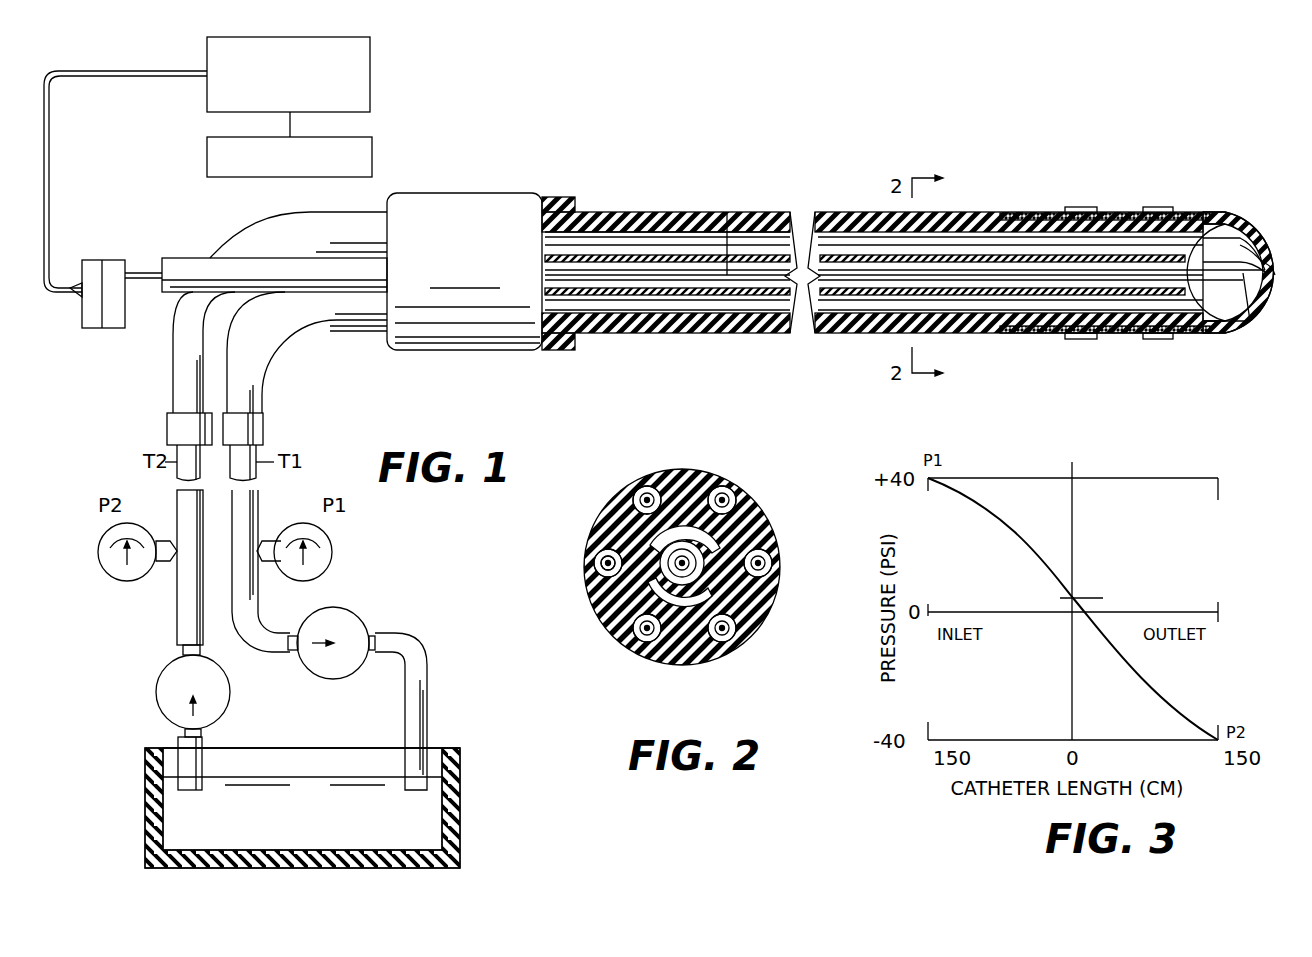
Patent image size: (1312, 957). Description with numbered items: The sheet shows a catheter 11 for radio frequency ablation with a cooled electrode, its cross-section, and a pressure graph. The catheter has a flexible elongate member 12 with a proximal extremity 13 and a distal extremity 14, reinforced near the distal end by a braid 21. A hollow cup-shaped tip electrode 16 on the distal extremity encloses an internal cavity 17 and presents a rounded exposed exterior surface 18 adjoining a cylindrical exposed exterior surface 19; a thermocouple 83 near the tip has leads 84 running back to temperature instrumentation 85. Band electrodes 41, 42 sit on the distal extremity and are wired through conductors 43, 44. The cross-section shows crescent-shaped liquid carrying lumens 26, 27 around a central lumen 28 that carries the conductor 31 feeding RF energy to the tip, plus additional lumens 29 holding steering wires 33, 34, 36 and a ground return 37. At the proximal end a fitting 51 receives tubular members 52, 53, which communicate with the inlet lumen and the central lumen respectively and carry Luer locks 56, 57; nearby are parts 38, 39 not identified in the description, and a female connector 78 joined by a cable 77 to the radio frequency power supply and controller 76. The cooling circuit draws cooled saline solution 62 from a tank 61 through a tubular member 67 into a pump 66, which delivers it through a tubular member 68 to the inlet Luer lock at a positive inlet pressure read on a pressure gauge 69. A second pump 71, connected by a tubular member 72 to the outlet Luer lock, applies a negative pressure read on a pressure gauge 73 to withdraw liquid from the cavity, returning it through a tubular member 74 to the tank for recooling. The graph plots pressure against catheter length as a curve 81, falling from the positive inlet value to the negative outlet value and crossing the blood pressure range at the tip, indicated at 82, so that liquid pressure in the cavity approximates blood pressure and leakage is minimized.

In FIG. 2, the catheter 11 is at (614, 480).
In FIG. 1, the flexible elongate member 12 is at (748, 333).
In FIG. 2, the flexible elongate member 12 is at (750, 488).
In FIG. 1, the proximal extremity 13 is at (600, 212).
In FIG. 1, the distal extremity 14 is at (1057, 340).
In FIG. 1, the hollow tip electrode 16 is at (1267, 220).
In FIG. 1, the internal cavity 17 is at (1228, 228).
In FIG. 1, the rounded exposed exterior surface 18 is at (1283, 287).
In FIG. 1, the cylindrical exposed exterior surface 19 is at (1222, 340).
In FIG. 1, the braid 21 is at (1143, 340).
In FIG. 1, the first liquid carrying lumen 26 is at (637, 300).
In FIG. 2, the first liquid carrying lumen 26 is at (745, 585).
In FIG. 1, the second liquid carrying lumen 27 is at (663, 232).
In FIG. 2, the second liquid carrying lumen 27 is at (610, 503).
In FIG. 2, the central lumen 28 is at (666, 580).
In FIG. 2, the additional lumens 29 is at (700, 487).
In FIG. 1, the conductor 31 is at (727, 222).
In FIG. 2, the conductor 31 is at (605, 520).
In FIG. 2, the steering wire 33 is at (732, 486).
In FIG. 2, the steering wire 34 is at (722, 642).
In FIG. 2, the steering wire 36 is at (592, 578).
In FIG. 2, the ground return 37 is at (647, 486).
In FIG. 1, the handle 38 is at (143, 272).
In FIG. 1, the rod 39 is at (116, 272).
In FIG. 1, the radio frequency electrode 41 is at (1077, 207).
In FIG. 1, the radio frequency electrode 42 is at (1152, 207).
In FIG. 2, the conductor 43 is at (773, 563).
In FIG. 2, the conductor 44 is at (628, 625).
In FIG. 1, the fitting 51 is at (540, 195).
In FIG. 1, the tubular member 52 is at (173, 355).
In FIG. 1, the tubular member 53 is at (268, 358).
In FIG. 1, the Luer lock 56 is at (167, 428).
In FIG. 1, the Luer lock 57 is at (263, 428).
In FIG. 1, the tank 61 is at (145, 800).
In FIG. 1, the cooled saline solution 62 is at (460, 800).
In FIG. 1, the pump 66 is at (168, 672).
In FIG. 1, the tubular member 67 is at (178, 740).
In FIG. 1, the tubular member 68 is at (178, 620).
In FIG. 1, the pressure gauge 69 is at (118, 568).
In FIG. 1, the pump 71 is at (356, 618).
In FIG. 1, the tubular member 72 is at (262, 648).
In FIG. 1, the pressure gauge 73 is at (332, 565).
In FIG. 1, the tubular member 74 is at (410, 720).
In FIG. 1, the radio frequency power supply and controller 76 is at (370, 56).
In FIG. 1, the cable 77 is at (108, 70).
In FIG. 1, the female connector 78 is at (90, 260).
In FIG. 3, the curve 81 is at (1005, 522).
In FIG. 3, the crossing point 82 is at (1075, 597).
In FIG. 1, the thermocouple 83 is at (1258, 243).
In FIG. 1, the leads 84 is at (1268, 263).
In FIG. 1, the instrumentation 85 is at (372, 150).